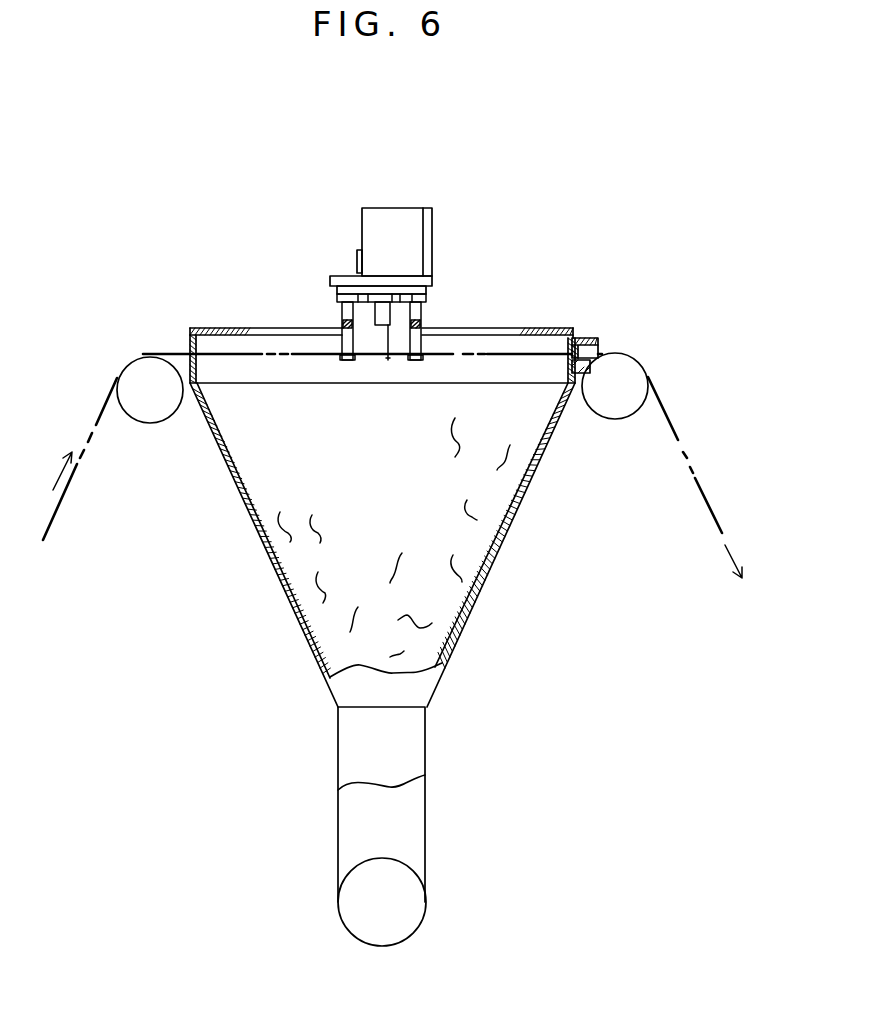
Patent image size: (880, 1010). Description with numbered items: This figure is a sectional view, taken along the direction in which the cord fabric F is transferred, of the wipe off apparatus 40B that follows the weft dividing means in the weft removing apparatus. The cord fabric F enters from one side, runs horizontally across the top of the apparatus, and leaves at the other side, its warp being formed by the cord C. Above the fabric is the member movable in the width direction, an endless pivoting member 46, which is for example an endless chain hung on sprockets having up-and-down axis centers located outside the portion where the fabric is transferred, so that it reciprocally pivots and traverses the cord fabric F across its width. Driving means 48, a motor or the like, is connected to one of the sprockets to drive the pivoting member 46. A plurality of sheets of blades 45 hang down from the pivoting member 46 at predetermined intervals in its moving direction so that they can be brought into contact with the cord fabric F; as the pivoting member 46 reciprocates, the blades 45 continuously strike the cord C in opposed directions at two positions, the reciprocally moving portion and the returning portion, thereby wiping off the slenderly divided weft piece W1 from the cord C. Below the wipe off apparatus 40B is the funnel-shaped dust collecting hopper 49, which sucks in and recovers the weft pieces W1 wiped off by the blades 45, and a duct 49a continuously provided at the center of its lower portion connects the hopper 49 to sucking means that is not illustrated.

The wipe off apparatus 40B is at (382, 226).
The driving means 48 is at (403, 222).
The pivoting member 46 is at (428, 302).
The blades 45 is at (392, 312).
The dust collecting hopper 49 is at (477, 605).
The duct 49a is at (405, 920).
The weft piece W1 is at (498, 470).
The cord fabric F is at (97, 430).
The cord C is at (705, 495).